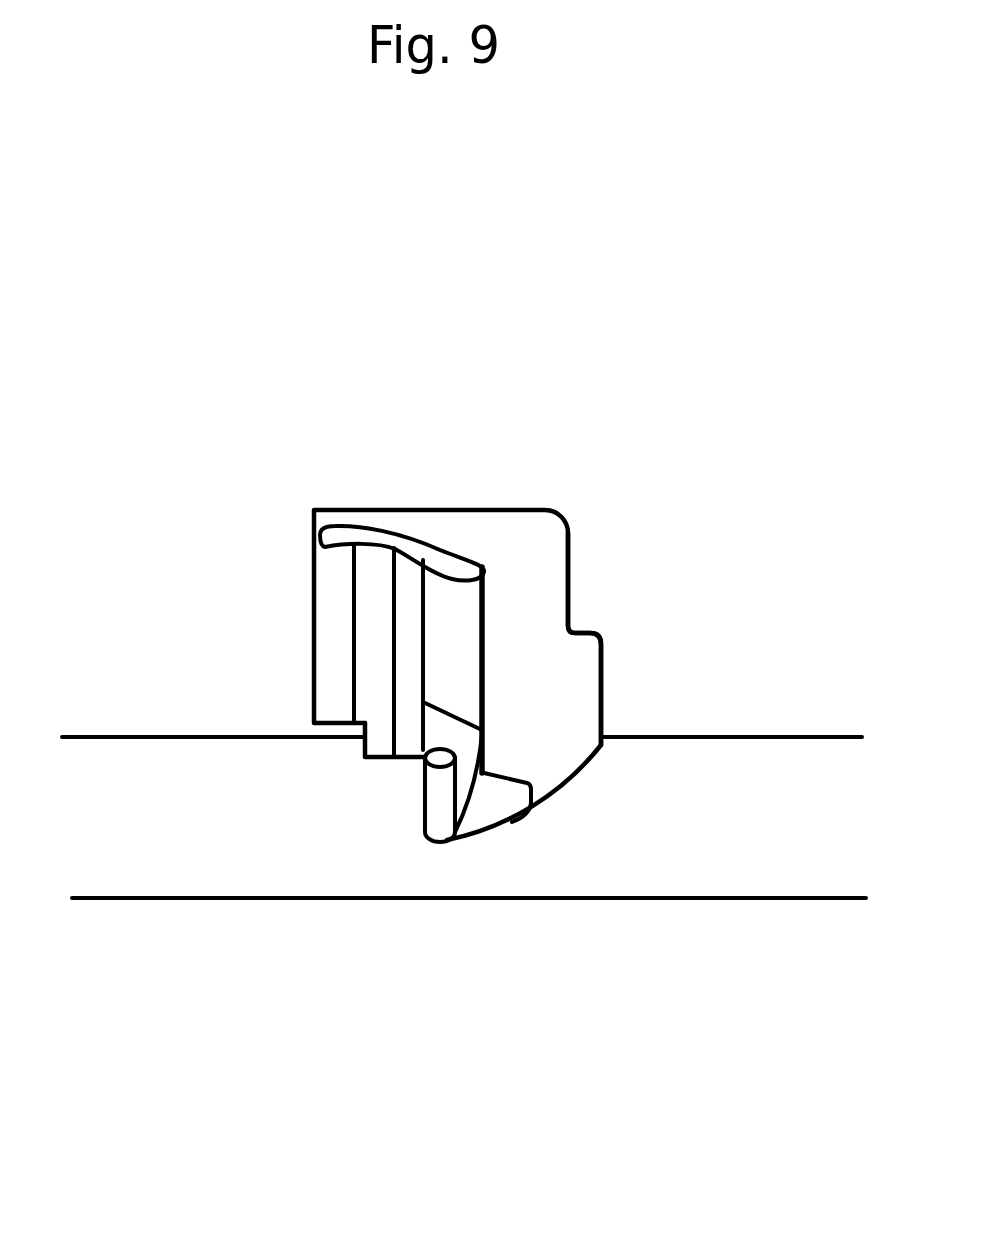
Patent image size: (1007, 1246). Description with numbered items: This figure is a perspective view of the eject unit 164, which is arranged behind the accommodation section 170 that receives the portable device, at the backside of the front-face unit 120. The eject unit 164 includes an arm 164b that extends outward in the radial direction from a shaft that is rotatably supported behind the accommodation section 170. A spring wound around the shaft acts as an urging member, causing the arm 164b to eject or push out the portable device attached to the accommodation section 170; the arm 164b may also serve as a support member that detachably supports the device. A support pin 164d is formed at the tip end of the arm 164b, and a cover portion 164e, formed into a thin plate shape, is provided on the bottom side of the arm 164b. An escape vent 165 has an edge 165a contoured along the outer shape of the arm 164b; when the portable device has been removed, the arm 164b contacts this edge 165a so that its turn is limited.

The front-face unit 120 is at (675, 932).
The eject unit 164 is at (490, 529).
The arm 164b is at (438, 557).
The support pin 164d is at (440, 760).
The cover portion 164e is at (503, 793).
The escape vent 165 is at (567, 538).
The edge 165a is at (387, 757).
The accommodation section 170 is at (161, 818).